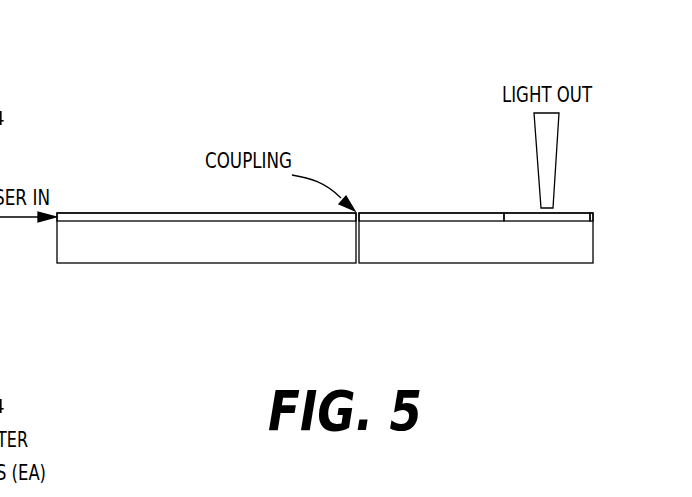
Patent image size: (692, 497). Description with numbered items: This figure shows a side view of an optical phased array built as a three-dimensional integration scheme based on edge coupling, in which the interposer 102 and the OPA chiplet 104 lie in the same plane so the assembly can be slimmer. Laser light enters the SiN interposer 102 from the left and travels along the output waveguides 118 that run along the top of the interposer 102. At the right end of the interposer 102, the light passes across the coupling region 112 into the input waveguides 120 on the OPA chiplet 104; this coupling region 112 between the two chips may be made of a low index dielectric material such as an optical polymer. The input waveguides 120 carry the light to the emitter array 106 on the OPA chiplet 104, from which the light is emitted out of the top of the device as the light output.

The SiN interposer 102 is at (215, 247).
The output waveguides 118 is at (118, 212).
The OPA chiplet 104 is at (473, 263).
The coupling region 112 is at (360, 209).
The input waveguides 120 is at (498, 221).
The emitter array (EA) 106 is at (593, 216).